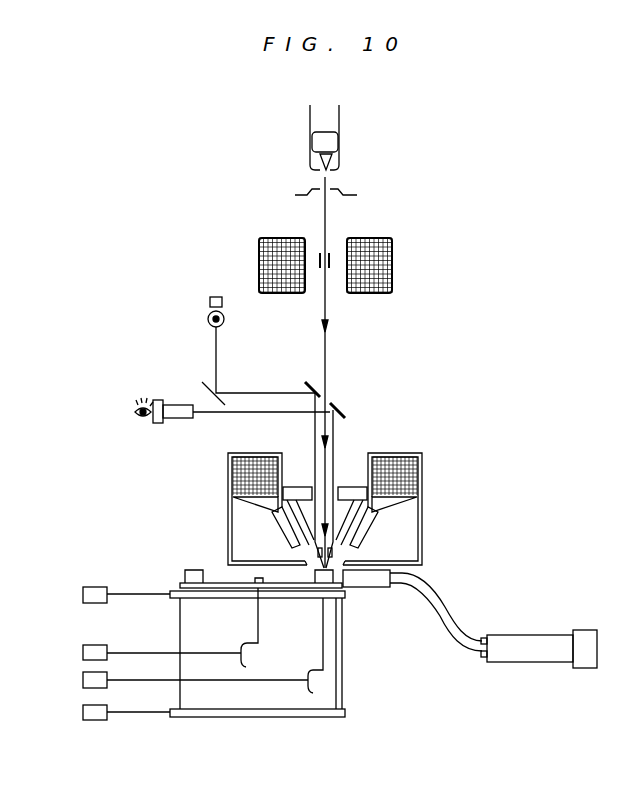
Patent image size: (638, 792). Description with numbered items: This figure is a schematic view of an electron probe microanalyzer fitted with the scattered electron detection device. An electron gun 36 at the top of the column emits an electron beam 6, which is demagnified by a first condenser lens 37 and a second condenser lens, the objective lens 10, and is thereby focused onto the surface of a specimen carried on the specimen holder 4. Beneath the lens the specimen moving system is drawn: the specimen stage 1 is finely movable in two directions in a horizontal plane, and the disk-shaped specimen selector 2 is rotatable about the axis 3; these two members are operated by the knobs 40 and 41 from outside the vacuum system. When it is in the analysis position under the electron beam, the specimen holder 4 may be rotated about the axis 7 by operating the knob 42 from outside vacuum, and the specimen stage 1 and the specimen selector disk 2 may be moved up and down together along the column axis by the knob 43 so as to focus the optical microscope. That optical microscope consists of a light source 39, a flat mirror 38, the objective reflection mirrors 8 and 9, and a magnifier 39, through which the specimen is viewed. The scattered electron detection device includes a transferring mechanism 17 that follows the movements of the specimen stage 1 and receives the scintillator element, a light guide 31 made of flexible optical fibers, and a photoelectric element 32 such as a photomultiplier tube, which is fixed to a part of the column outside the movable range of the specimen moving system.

The specimen stage 1 is at (192, 598).
The specimen selector disk 2 is at (222, 583).
The axis 3 is at (260, 620).
The specimen holder 4 is at (329, 605).
The electron beam 6 is at (327, 350).
The axis 7 is at (323, 648).
The objective reflection mirror 8 is at (352, 487).
The objective reflection mirror 9 is at (350, 540).
The second condenser lens (objective lens) 10 is at (421, 533).
The detector 17 is at (380, 587).
The light guide 31 is at (456, 628).
The photoelectric element 32 is at (540, 648).
The electron gun 36 is at (339, 147).
The first condenser lens 37 is at (392, 275).
The flat mirror 38 is at (344, 410).
The light source and magnifier 39 is at (208, 300).
The knob 40 is at (82, 594).
The knob 41 is at (82, 650).
The knob 42 is at (82, 678).
The knob 43 is at (82, 710).